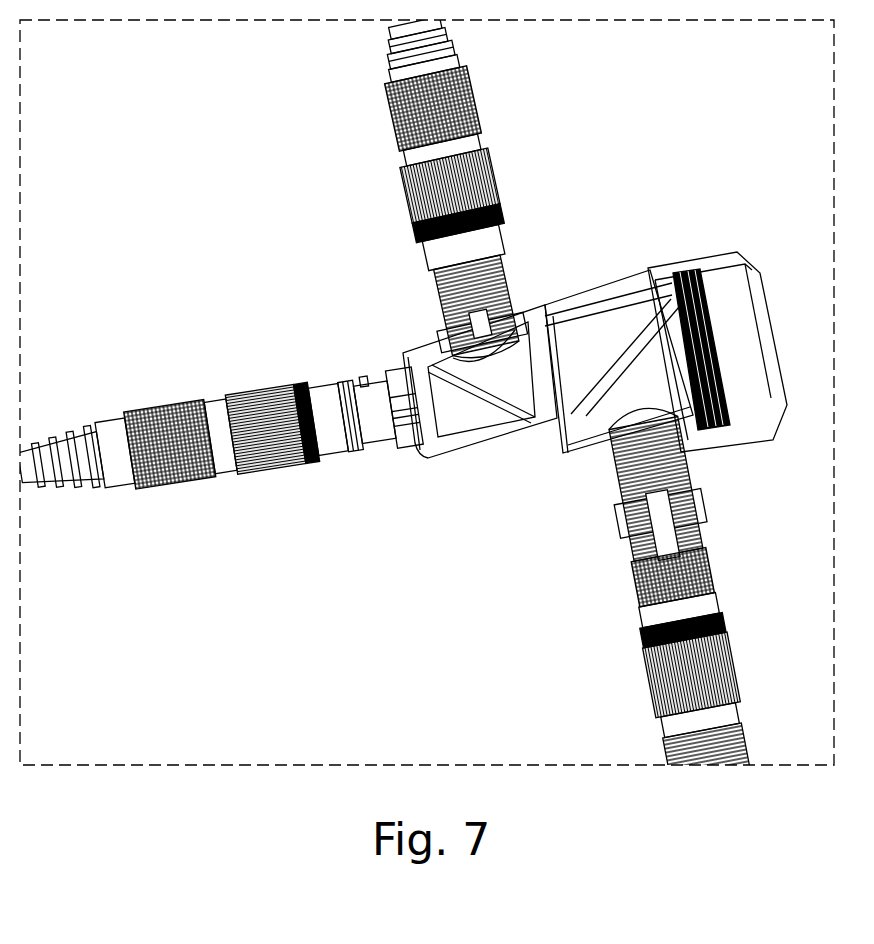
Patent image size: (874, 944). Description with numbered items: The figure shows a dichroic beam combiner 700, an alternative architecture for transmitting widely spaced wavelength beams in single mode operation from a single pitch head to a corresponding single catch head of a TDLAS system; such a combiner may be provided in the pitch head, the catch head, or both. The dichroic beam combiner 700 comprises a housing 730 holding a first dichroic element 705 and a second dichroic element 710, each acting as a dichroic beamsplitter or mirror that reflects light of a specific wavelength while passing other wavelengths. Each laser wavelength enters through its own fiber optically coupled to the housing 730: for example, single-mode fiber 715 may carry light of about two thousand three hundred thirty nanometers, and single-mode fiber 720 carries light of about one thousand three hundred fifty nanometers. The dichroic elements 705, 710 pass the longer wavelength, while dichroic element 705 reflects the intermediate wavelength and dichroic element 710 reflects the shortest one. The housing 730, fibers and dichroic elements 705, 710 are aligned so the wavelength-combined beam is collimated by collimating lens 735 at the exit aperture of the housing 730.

The dichroic beam combiner 700 is at (475, 559).
The first dichroic element 705 is at (505, 405).
The second dichroic element 710 is at (618, 368).
The single-mode fiber 715 is at (398, 442).
The single-mode fiber 720 is at (444, 316).
The housing 730 is at (730, 443).
The collimating lens 735 is at (720, 292).